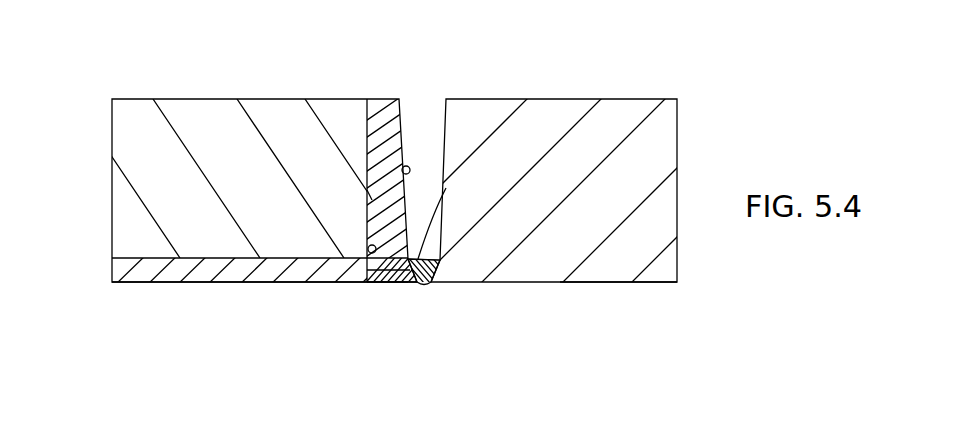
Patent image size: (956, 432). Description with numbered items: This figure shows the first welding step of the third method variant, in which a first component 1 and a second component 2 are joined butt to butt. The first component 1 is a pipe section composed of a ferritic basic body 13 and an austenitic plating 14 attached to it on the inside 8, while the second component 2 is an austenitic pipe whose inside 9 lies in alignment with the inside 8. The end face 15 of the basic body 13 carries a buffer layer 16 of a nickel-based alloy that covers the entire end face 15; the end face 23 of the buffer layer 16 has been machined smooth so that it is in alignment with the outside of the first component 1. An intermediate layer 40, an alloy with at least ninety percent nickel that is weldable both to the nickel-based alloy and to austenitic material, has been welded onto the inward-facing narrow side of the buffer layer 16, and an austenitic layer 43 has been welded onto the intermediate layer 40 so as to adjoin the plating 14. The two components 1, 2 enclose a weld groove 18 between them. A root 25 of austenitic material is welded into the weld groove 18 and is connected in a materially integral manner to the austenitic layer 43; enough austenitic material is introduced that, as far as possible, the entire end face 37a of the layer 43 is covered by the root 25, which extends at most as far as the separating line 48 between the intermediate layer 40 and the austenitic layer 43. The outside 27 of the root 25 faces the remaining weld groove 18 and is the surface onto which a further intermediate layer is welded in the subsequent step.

The first component 1 is at (186, 118).
The second component 2 is at (650, 146).
The inside 8 is at (190, 284).
The inside 9 is at (627, 283).
The basic body 13 is at (158, 185).
The plating 14 is at (243, 284).
The end face 15 is at (376, 205).
The buffer layer 16 is at (385, 152).
The weld groove 18 is at (419, 120).
The end face 23 is at (400, 172).
The root 25 is at (430, 285).
The outside 27 is at (446, 183).
The end face 37a is at (405, 286).
The intermediate layer 40 is at (367, 240).
The austenitic layer 43 is at (370, 286).
The separating line 48 is at (387, 285).